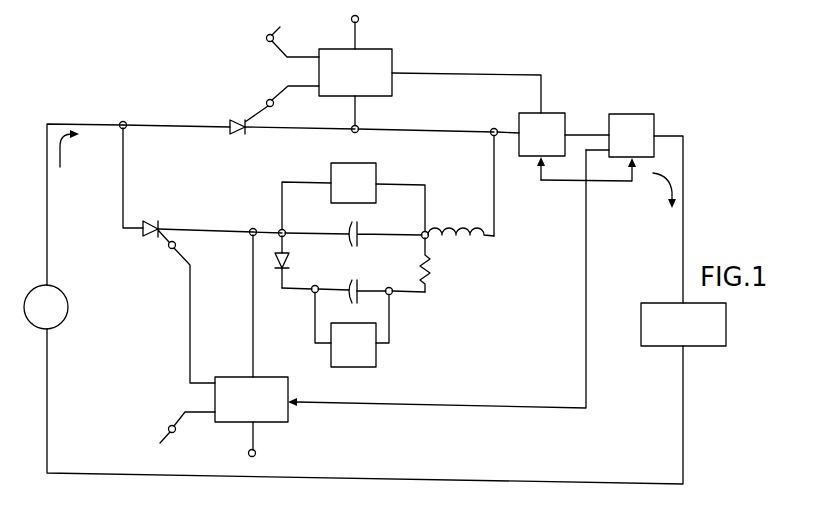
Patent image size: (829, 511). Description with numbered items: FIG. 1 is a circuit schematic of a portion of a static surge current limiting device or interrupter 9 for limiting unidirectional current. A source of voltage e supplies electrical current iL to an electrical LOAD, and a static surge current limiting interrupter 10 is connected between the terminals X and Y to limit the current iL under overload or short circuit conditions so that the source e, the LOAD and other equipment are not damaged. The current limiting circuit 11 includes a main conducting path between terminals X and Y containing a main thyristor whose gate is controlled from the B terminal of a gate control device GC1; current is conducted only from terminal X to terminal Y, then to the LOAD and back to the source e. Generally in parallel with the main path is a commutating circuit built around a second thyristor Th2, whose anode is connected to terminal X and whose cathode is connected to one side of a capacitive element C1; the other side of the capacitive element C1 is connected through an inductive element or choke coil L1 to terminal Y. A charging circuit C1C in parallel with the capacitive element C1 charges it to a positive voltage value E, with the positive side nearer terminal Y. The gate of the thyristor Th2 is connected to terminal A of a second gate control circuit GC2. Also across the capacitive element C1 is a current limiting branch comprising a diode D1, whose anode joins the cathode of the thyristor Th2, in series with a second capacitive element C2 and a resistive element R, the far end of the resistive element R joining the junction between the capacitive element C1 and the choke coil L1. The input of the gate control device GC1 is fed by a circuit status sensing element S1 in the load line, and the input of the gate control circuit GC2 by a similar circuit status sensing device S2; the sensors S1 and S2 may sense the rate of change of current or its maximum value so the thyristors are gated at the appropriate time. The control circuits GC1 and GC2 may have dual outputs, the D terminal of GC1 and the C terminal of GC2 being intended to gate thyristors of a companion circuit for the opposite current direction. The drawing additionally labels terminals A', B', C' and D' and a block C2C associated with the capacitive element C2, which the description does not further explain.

The static surge current limiting device or interrupter 9 is at (152, 349).
The static surge current limiting interrupter 10 is at (392, 63).
The current limiting circuit 11 is at (405, 125).
The source of voltage e is at (46, 307).
The electrical current iL is at (367, 173).
The terminal X is at (121, 122).
The terminal Y is at (492, 130).
The terminal A of gate control circuit GC2 A is at (181, 313).
The terminal A' is at (242, 290).
The B terminal of gate control device GC1 B is at (283, 96).
The terminal B' is at (340, 114).
The C output terminal of control circuit GC2 C is at (183, 425).
The terminal C' is at (267, 439).
The D output terminal of control circuit GC1 D is at (281, 45).
The terminal D' is at (340, 31).
The gate control device GC1 is at (411, 46).
The gate control circuit GC2 is at (251, 399).
The circuit status sensing element S1 is at (564, 146).
The circuit status sensing device S2 is at (597, 147).
The electrical load LOAD is at (683, 324).
The second thyristor or gated device Th2 is at (157, 223).
The diode or passive diode element D1 is at (294, 267).
The capacitive element C1 is at (346, 224).
The capacitive element C2 is at (354, 277).
The charging circuit C1C is at (353, 183).
The capacitor C2 charging circuit C2C is at (352, 330).
The voltage value + E is at (374, 226).
The resistive element R is at (417, 264).
The inductive element or choke coil L1 is at (470, 243).